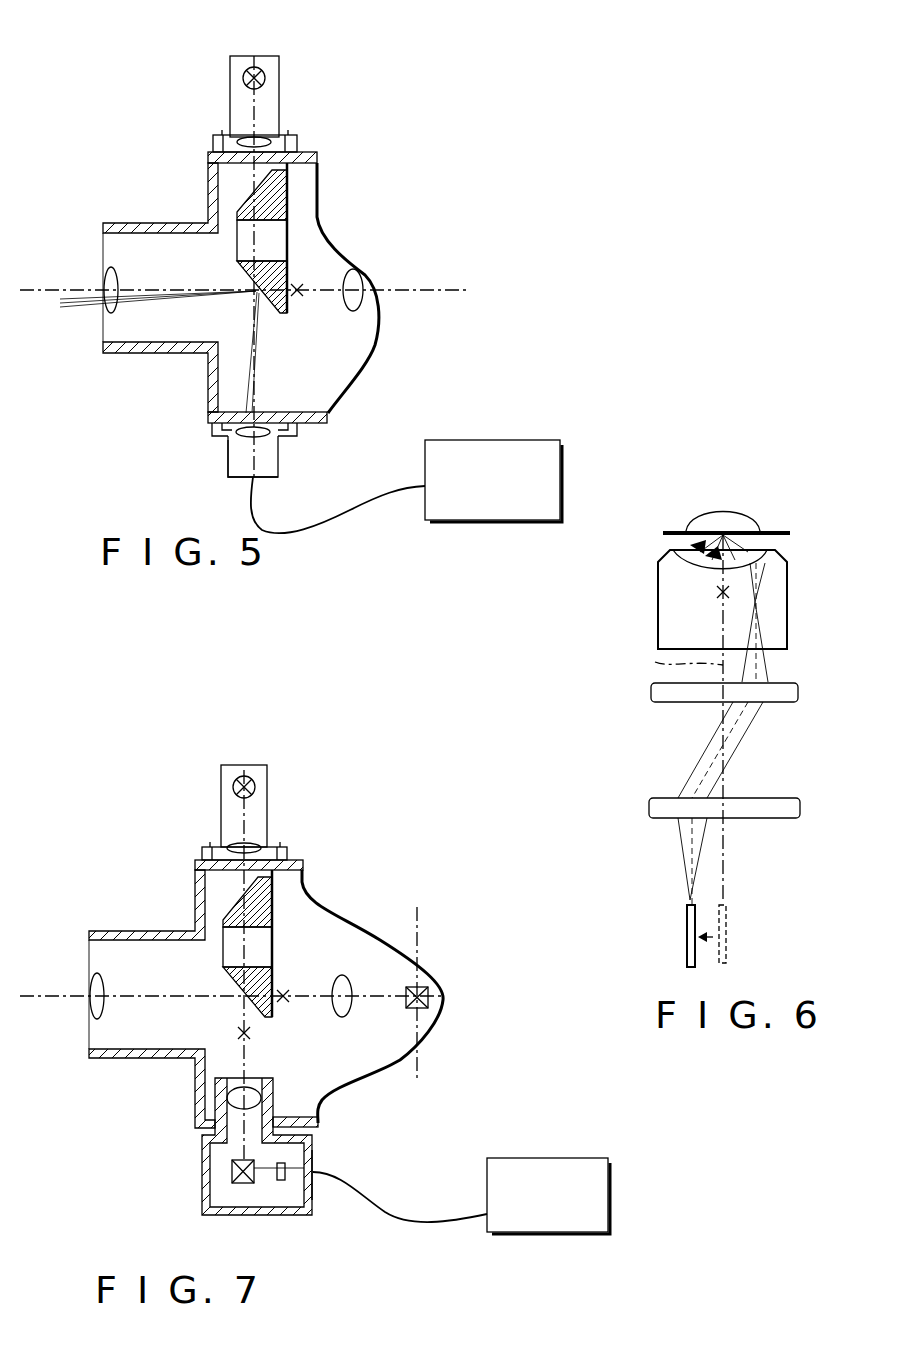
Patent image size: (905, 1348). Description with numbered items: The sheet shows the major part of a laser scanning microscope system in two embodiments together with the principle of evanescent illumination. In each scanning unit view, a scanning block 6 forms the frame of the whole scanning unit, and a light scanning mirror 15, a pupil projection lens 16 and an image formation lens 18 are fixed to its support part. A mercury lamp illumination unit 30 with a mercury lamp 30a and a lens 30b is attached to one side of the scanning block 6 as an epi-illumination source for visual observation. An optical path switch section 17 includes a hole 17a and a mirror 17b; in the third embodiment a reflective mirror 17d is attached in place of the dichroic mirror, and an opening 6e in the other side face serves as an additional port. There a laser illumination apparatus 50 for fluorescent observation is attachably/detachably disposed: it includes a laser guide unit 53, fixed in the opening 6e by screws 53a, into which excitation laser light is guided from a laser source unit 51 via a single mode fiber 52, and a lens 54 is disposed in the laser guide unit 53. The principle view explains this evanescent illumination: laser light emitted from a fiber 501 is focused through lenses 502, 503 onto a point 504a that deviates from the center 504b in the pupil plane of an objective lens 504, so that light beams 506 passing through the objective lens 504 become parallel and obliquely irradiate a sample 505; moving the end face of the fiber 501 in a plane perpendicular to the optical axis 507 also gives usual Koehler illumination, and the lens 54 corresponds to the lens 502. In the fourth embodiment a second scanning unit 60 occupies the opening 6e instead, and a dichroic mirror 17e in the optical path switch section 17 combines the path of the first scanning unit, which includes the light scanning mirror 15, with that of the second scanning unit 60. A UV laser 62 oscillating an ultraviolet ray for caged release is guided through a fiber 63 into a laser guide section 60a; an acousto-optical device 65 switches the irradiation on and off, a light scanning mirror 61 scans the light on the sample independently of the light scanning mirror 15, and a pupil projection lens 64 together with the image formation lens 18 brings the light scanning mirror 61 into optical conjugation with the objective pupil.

In FIG. 5, the scanning block 6 is at (245, 287).
In FIG. 7, the scanning block 6 is at (266, 997).
In FIG. 5, the opening 6e is at (268, 418).
In FIG. 7, the opening 6e is at (285, 1116).
In FIG. 7, the light scanning mirror 15 is at (429, 1002).
In FIG. 5, the pupil projection lens 16 is at (358, 297).
In FIG. 7, the pupil projection lens 16 is at (343, 982).
In FIG. 5, the optical path switch section 17 is at (286, 265).
In FIG. 7, the optical path switch section 17 is at (253, 929).
In FIG. 5, the hole 17a is at (272, 240).
In FIG. 7, the hole 17a is at (258, 950).
In FIG. 5, the mirror 17b is at (289, 188).
In FIG. 7, the mirror 17b is at (232, 905).
In FIG. 5, the reflective mirror 17d is at (272, 310).
In FIG. 7, the dichroic mirror 17e is at (226, 990).
In FIG. 5, the image formation lens 18 is at (107, 272).
In FIG. 7, the image formation lens 18 is at (92, 976).
In FIG. 5, the mercury lamp illumination unit 30 is at (272, 93).
In FIG. 7, the mercury lamp illumination unit 30 is at (262, 817).
In FIG. 5, the mercury lamp 30a is at (258, 72).
In FIG. 7, the mercury lamp 30a is at (256, 785).
In FIG. 5, the lens 30b is at (266, 137).
In FIG. 7, the lens 30b is at (255, 845).
In FIG. 5, the laser illumination apparatus 50 is at (263, 464).
In FIG. 5, the laser source unit 51 is at (516, 440).
In FIG. 5, the single mode fiber 52 is at (351, 515).
In FIG. 5, the laser guide unit 53 is at (230, 477).
In FIG. 5, the screws 53a is at (212, 438).
In FIG. 5, the lens 54 is at (272, 433).
In FIG. 7, the second scanning unit 60 is at (207, 1142).
In FIG. 7, the laser guide section 60a is at (312, 1168).
In FIG. 7, the light scanning mirror 61 is at (232, 1172).
In FIG. 7, the UV laser 62 is at (503, 1238).
In FIG. 7, the fiber 63 is at (425, 1230).
In FIG. 7, the pupil projection lens 64 is at (255, 1093).
In FIG. 7, the acousto-optical device 65 is at (278, 1180).
In FIG. 6, the fiber 501 is at (687, 957).
In FIG. 6, the lens 502 is at (800, 808).
In FIG. 6, the lens 503 is at (799, 692).
In FIG. 6, the objective lens 504 is at (735, 616).
In FIG. 6, the point 504a is at (762, 597).
In FIG. 6, the center 504b is at (715, 592).
In FIG. 6, the sample 505 is at (762, 525).
In FIG. 6, the light beams 506 is at (752, 541).
In FIG. 6, the optical axis 507 is at (665, 664).